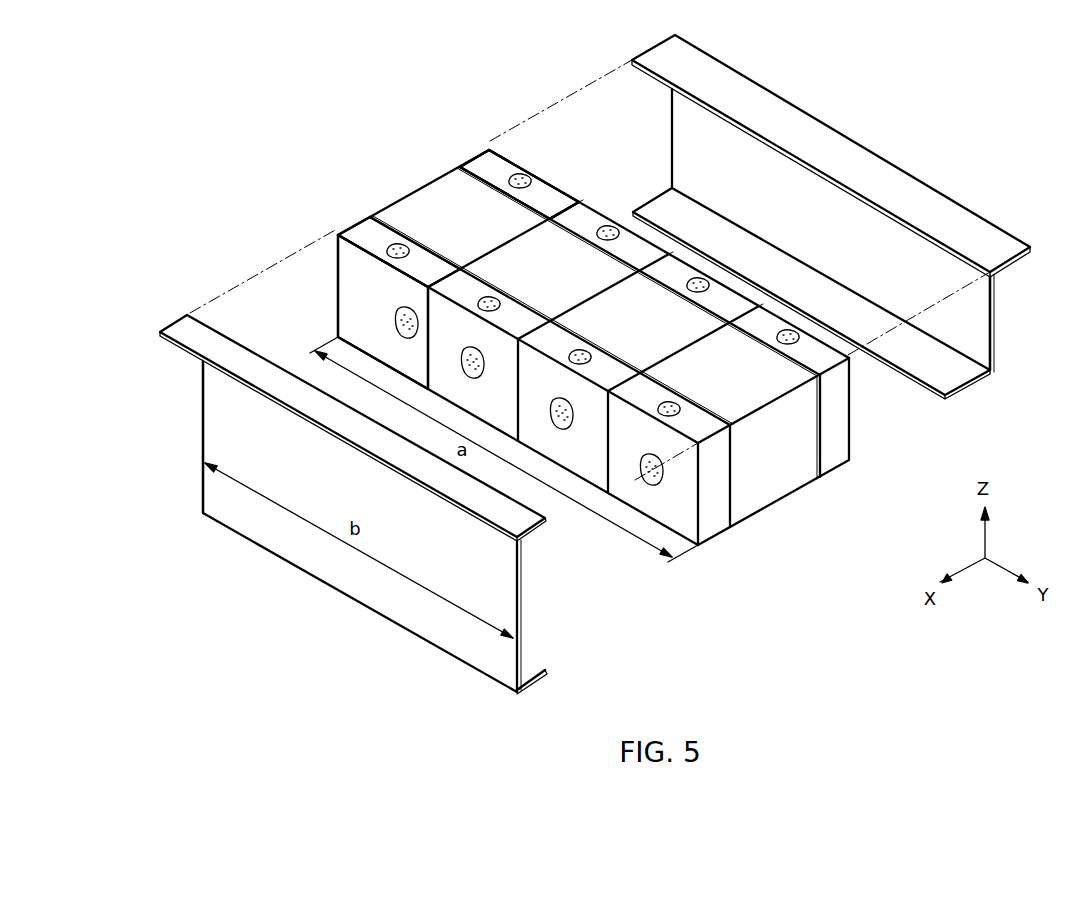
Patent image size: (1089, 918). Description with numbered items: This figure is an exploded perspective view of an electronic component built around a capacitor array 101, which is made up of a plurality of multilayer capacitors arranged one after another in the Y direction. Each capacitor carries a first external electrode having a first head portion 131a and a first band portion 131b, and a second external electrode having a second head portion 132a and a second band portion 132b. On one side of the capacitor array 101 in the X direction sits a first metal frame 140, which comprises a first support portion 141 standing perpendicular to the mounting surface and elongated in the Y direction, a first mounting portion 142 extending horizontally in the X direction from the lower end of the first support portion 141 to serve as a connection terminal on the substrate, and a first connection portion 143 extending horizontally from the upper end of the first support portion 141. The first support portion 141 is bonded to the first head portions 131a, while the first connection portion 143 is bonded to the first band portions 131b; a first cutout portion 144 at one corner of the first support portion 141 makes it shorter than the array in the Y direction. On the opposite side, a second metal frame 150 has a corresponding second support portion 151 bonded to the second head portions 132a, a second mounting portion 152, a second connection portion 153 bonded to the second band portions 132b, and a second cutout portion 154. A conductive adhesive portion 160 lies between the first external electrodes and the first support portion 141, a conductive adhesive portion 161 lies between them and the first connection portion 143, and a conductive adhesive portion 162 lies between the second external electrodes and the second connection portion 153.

The capacitor array 101 is at (547, 296).
The first head portion 131a is at (348, 313).
The first band portion 131b is at (363, 237).
The second head portion 132a is at (533, 167).
The second band portion 132b is at (490, 168).
The first metal frame 140 is at (353, 519).
The first support portion 141 is at (443, 627).
The first mounting portion 142 is at (528, 674).
The first connection portion 143 is at (448, 490).
The first cutout portion 144 is at (202, 451).
The second metal frame 150 is at (850, 217).
The second support portion 151 is at (860, 225).
The second mounting portion 152 is at (867, 317).
The second connection portion 153 is at (838, 140).
The second cutout portion 154 is at (994, 316).
The conductive adhesive portion 160 is at (397, 323).
The conductive adhesive portion 161 is at (407, 248).
The conductive adhesive portion 162 is at (530, 184).